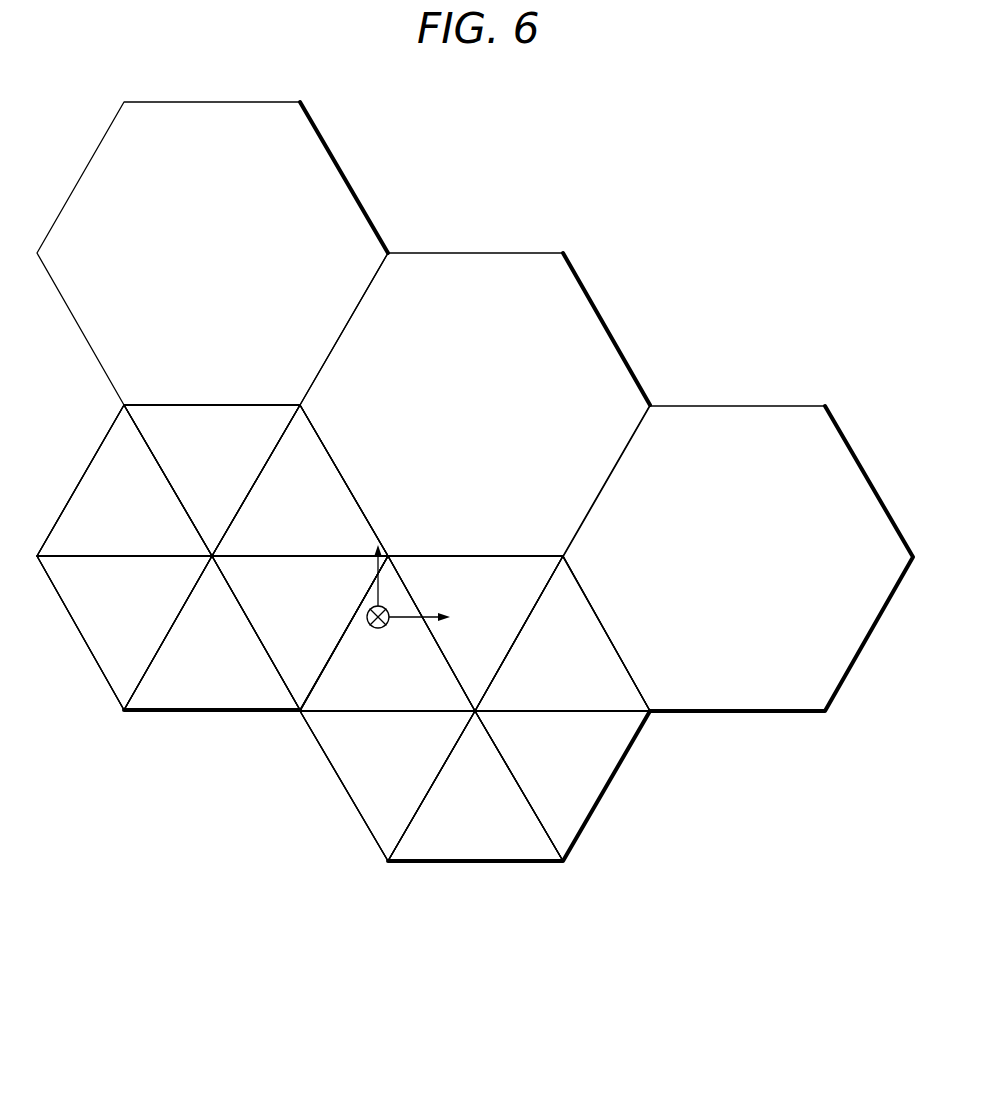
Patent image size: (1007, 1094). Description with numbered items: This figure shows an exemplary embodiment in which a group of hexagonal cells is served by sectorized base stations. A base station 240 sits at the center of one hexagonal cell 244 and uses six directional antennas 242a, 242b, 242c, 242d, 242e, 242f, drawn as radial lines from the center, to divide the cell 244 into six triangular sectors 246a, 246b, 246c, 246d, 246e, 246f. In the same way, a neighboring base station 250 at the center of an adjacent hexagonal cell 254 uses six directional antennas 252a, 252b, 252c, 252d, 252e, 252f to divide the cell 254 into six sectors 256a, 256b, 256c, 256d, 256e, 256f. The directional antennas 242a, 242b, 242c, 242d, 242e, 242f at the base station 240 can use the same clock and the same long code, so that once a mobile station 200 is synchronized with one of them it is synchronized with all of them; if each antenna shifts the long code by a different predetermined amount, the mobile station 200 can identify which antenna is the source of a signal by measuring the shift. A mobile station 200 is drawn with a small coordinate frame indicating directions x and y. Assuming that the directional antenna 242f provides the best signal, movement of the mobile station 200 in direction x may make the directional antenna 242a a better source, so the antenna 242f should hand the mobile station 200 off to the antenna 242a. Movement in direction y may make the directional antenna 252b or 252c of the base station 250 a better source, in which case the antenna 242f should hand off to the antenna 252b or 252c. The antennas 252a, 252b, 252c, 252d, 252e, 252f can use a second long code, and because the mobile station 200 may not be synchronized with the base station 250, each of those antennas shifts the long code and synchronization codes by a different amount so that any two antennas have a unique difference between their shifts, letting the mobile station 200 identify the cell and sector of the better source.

The mobile station 200 is at (387, 608).
The base station 240 is at (475, 711).
The directional antenna 242a is at (475, 711).
The directional antenna 242b is at (475, 711).
The directional antenna 242c is at (475, 711).
The directional antenna 242d is at (475, 711).
The directional antenna 242e is at (475, 711).
The directional antenna 242f is at (475, 711).
The cell 244 is at (591, 845).
The sector 246a is at (455, 595).
The sector 246b is at (551, 660).
The sector 246c is at (552, 787).
The sector 246d is at (452, 850).
The sector 246e is at (352, 787).
The sector 246f is at (345, 660).
The base station 250 is at (212, 556).
The directional antenna 252a is at (212, 556).
The directional antenna 252b is at (212, 556).
The directional antenna 252c is at (212, 556).
The directional antenna 252d is at (212, 556).
The directional antenna 252e is at (212, 556).
The directional antenna 252f is at (212, 556).
The cell 254 is at (215, 724).
The sector 256a is at (192, 442).
The sector 256b is at (292, 507).
The sector 256c is at (289, 632).
The sector 256d is at (192, 697).
The sector 256e is at (87, 632).
The sector 256f is at (87, 507).